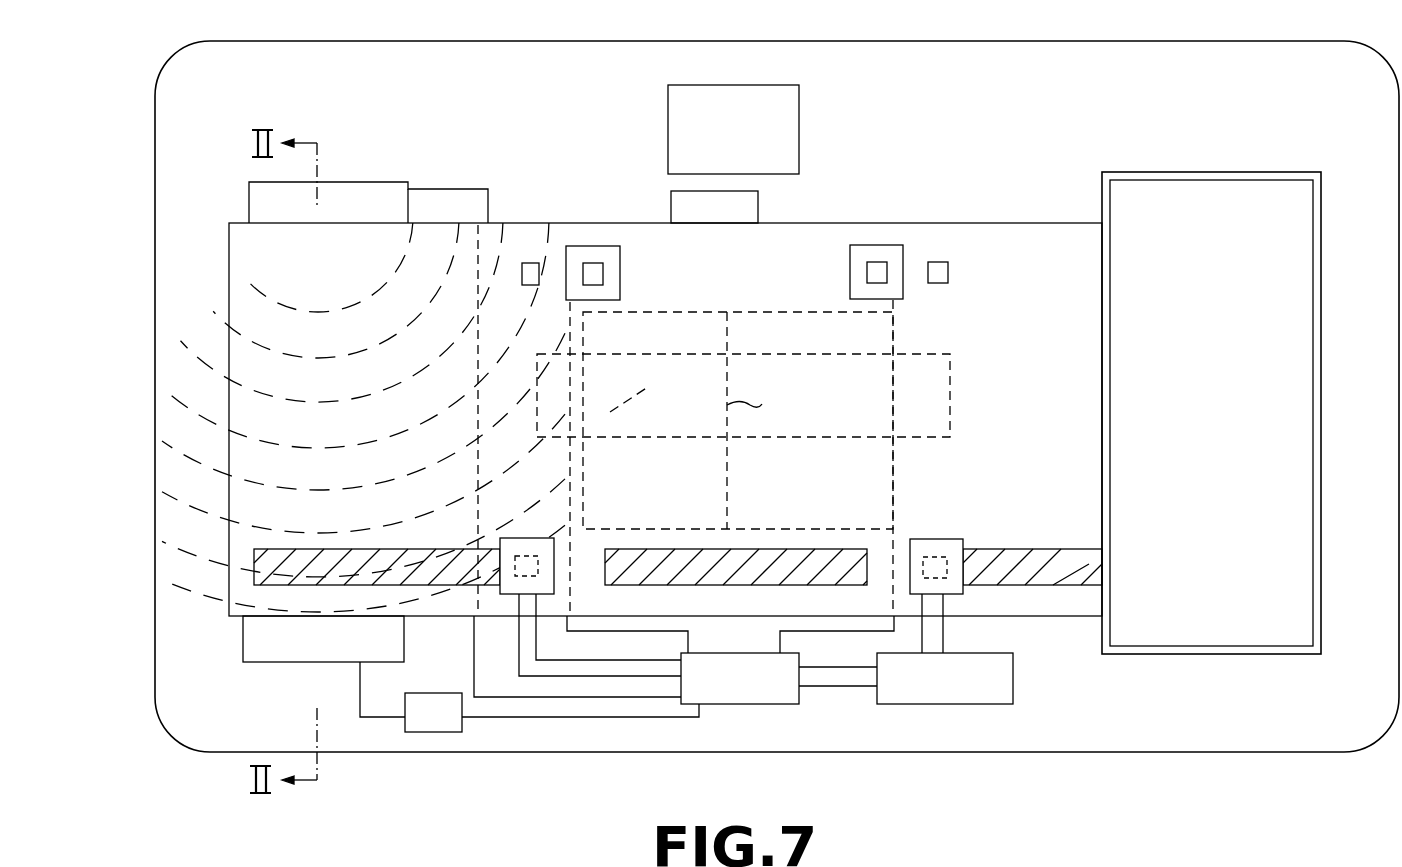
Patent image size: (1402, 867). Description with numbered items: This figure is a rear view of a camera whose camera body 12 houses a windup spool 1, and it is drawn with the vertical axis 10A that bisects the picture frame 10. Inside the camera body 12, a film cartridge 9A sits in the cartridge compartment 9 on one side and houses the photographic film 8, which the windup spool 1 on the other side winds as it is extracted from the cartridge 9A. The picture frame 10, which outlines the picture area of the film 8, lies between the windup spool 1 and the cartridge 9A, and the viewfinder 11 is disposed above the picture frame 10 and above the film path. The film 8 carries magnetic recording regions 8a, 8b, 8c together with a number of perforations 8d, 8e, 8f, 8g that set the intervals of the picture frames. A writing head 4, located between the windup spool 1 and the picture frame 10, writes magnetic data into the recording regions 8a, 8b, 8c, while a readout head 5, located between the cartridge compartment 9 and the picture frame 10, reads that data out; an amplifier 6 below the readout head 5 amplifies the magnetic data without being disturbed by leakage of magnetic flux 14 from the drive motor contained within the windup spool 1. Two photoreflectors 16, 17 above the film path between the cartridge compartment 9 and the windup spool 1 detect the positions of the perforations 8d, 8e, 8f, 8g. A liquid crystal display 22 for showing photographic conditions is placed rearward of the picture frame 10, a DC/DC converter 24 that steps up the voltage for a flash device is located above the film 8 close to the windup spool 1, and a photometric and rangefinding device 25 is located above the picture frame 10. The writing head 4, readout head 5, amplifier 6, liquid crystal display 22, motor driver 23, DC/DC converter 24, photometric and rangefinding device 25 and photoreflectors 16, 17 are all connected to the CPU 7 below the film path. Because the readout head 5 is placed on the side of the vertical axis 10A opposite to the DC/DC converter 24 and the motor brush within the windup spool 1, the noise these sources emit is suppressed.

The windup spool 1 is at (317, 656).
The writing head 4 is at (510, 594).
The readout head 5 is at (927, 540).
The amplifier 6 is at (1010, 689).
The CPU 7 is at (752, 704).
The photographic film 8 is at (1063, 238).
The magnetic recording region 8a is at (338, 557).
The magnetic recording region 8b is at (748, 555).
The magnetic recording region 8c is at (1015, 555).
The perforation 8d is at (530, 262).
The perforation 8e is at (593, 262).
The perforation 8f is at (880, 262).
The perforation 8g is at (940, 262).
The cartridge compartment 9 is at (1180, 654).
The film cartridge 9A is at (1285, 626).
The picture frame 10 is at (895, 408).
The vertical axis 10A is at (774, 406).
The viewfinder 11 is at (790, 122).
The camera body 12 is at (1020, 39).
The magnetic flux 14 is at (646, 389).
The photoreflector 16 is at (603, 272).
The photoreflector 17 is at (850, 272).
The liquid crystal display 22 is at (745, 355).
The motor driver 23 is at (435, 722).
The DC/DC converter 24 is at (432, 197).
The photometric and rangefinding device 25 is at (677, 210).